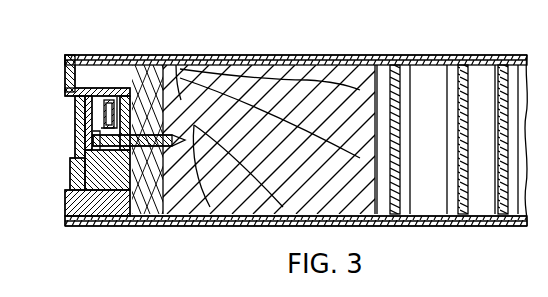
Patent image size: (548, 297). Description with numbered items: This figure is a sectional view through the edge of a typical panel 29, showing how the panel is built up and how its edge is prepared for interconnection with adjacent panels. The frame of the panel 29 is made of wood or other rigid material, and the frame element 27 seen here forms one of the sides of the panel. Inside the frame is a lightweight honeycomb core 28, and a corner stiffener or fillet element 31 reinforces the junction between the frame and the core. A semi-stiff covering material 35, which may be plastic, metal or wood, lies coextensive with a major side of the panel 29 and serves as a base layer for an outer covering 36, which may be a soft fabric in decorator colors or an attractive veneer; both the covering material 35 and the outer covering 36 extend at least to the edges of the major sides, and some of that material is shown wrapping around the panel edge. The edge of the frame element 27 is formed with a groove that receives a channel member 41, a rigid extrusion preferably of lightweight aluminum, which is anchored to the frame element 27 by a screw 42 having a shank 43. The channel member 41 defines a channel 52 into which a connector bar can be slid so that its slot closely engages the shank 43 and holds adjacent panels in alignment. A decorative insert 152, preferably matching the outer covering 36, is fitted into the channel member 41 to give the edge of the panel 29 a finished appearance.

The frame element 27 is at (167, 226).
The honeycomb core 28 is at (463, 90).
The panel 29 is at (351, 54).
The corner stiffener or fillet element 31 is at (290, 78).
The covering material 35 is at (417, 62).
The outer covering 36 is at (229, 62).
The channel member 41 is at (100, 195).
The screw 42 is at (194, 125).
The shank 43 is at (83, 135).
The channel 52 is at (105, 56).
The insert 152 is at (83, 144).